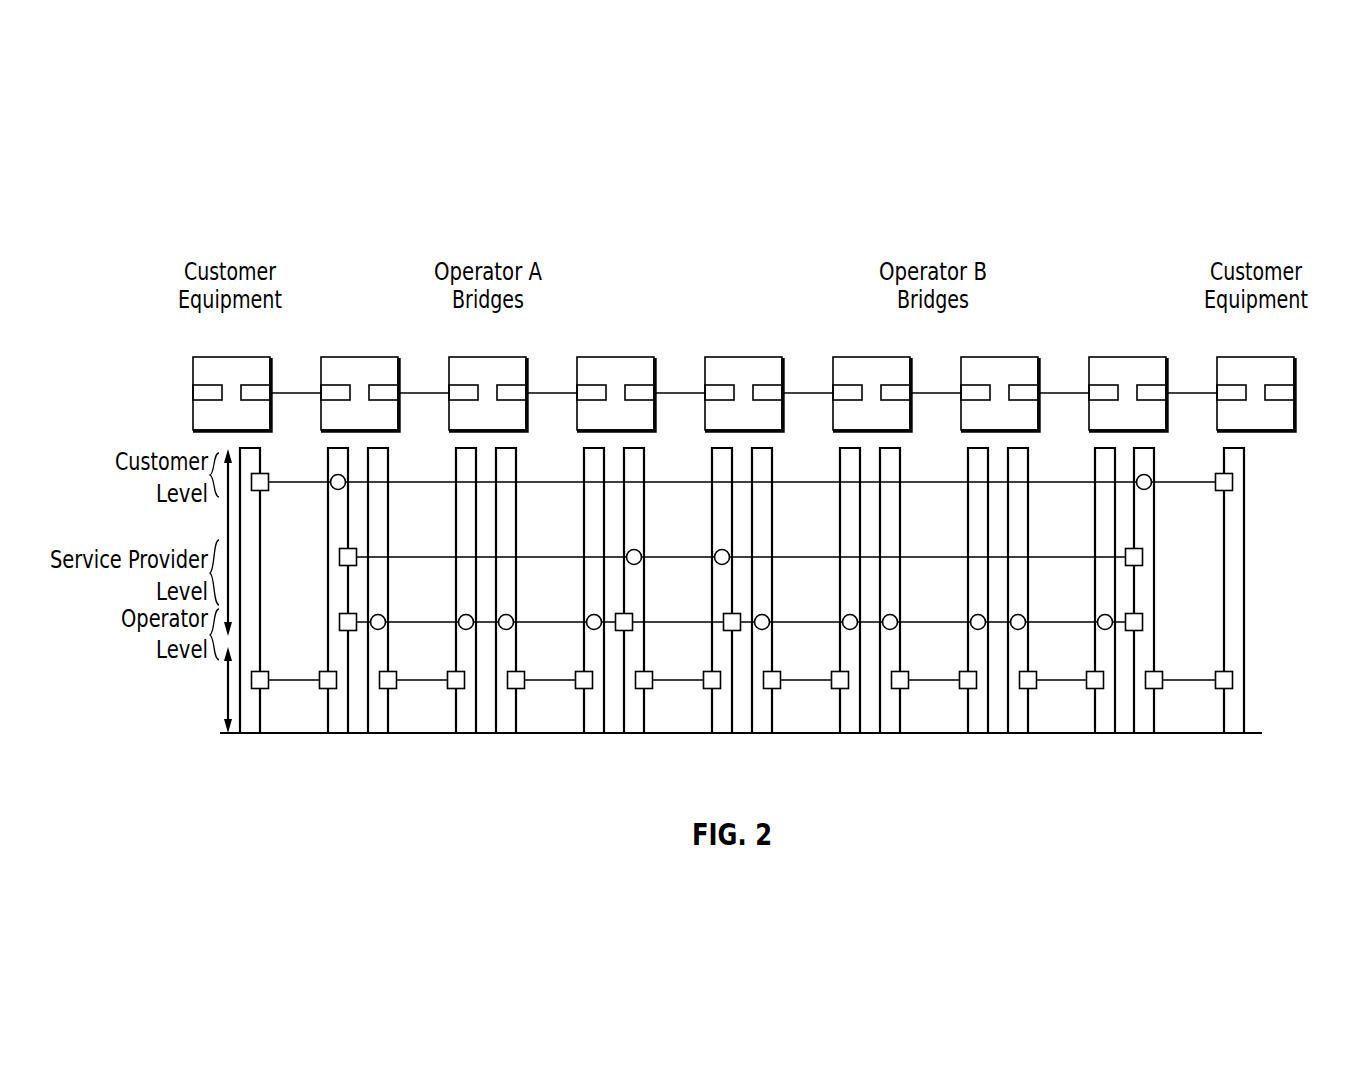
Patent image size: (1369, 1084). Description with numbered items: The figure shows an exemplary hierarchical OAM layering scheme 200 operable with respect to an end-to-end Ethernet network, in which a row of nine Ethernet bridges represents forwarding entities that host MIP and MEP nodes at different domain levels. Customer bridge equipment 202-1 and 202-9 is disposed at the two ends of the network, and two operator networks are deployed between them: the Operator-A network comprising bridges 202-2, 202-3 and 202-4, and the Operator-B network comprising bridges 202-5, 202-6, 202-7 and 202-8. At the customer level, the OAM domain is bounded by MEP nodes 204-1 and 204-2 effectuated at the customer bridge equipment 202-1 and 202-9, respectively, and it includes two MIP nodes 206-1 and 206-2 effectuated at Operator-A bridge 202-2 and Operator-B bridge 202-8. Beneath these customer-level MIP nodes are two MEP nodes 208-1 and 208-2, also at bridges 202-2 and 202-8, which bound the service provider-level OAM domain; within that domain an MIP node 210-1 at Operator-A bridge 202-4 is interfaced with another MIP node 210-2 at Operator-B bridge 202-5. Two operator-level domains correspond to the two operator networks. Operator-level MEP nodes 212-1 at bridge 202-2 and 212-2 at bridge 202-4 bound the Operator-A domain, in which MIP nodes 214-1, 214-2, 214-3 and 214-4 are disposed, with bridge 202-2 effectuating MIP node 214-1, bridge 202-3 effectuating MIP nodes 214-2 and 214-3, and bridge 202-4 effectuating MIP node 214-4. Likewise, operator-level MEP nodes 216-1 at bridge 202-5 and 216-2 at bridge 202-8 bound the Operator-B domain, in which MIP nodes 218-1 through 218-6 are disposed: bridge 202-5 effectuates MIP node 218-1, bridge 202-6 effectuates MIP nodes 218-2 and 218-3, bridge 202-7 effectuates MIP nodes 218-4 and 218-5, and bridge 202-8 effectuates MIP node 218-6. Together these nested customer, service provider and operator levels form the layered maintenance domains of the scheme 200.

The hierarchical OAM layering scheme 200 is at (1112, 218).
The customer bridge equipment 202-1 is at (212, 356).
The Operator-A bridge 202-2 is at (340, 356).
The Operator-A bridge 202-3 is at (468, 356).
The Operator-A bridge 202-4 is at (596, 356).
The Operator-B bridge 202-5 is at (724, 356).
The Operator-B bridge 202-6 is at (852, 356).
The Operator-B bridge 202-7 is at (980, 356).
The Operator-B bridge 202-8 is at (1108, 356).
The customer bridge equipment 202-9 is at (1236, 356).
The MEP node 204-1 is at (288, 494).
The MEP node 204-2 is at (1196, 469).
The MIP node 206-1 is at (307, 468).
The MIP node 206-2 is at (1177, 496).
The MEP node 208-1 is at (312, 550).
The MEP node 208-2 is at (1171, 569).
The MIP node 210-1 is at (667, 546).
The MIP node 210-2 is at (689, 570).
The operator-level MEP node 212-1 is at (312, 616).
The operator-level MEP node 212-2 is at (661, 636).
The MIP node 214-1 is at (409, 637).
The MIP node 214-2 is at (434, 608).
The MIP node 214-3 is at (538, 637).
The MIP node 214-4 is at (562, 608).
The operator-level MEP node 216-1 is at (694, 611).
The operator-level MEP node 216-2 is at (1171, 635).
The MIP node 218-1 is at (796, 637).
The MIP node 218-2 is at (818, 608).
The MIP node 218-3 is at (921, 637).
The MIP node 218-4 is at (944, 608).
The MIP node 218-5 is at (1049, 637).
The MIP node 218-6 is at (1072, 608).